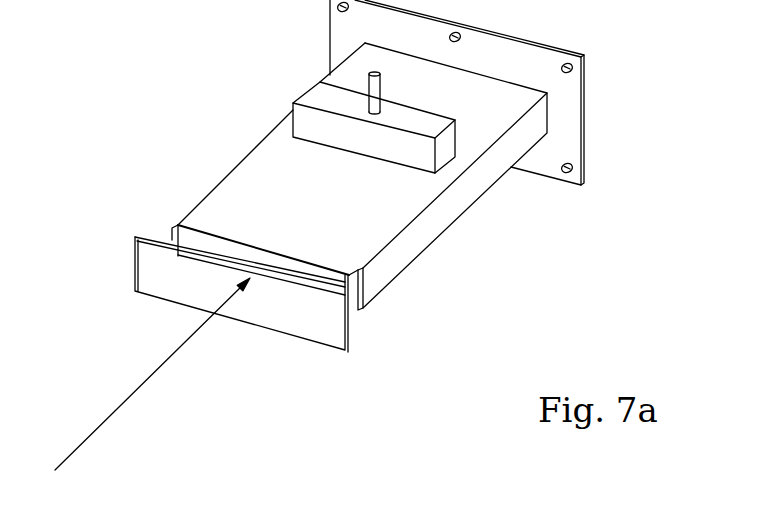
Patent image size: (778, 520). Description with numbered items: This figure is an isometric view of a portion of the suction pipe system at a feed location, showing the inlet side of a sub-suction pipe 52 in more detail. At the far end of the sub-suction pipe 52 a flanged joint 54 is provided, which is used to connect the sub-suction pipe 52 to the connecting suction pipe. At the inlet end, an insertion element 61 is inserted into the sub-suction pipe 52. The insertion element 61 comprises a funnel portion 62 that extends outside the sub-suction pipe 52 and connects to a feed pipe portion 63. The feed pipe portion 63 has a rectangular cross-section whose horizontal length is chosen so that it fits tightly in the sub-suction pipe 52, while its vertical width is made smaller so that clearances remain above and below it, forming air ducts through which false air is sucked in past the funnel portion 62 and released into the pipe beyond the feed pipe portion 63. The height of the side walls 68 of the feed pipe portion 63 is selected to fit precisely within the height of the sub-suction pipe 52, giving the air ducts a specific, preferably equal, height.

The sub-suction pipe 52 is at (558, 273).
The flanged joint 54 is at (570, 120).
The insertion element 61 is at (388, 352).
The funnel portion 62 is at (147, 263).
The feed pipe portion 63 is at (212, 243).
The side walls 68 is at (176, 227).